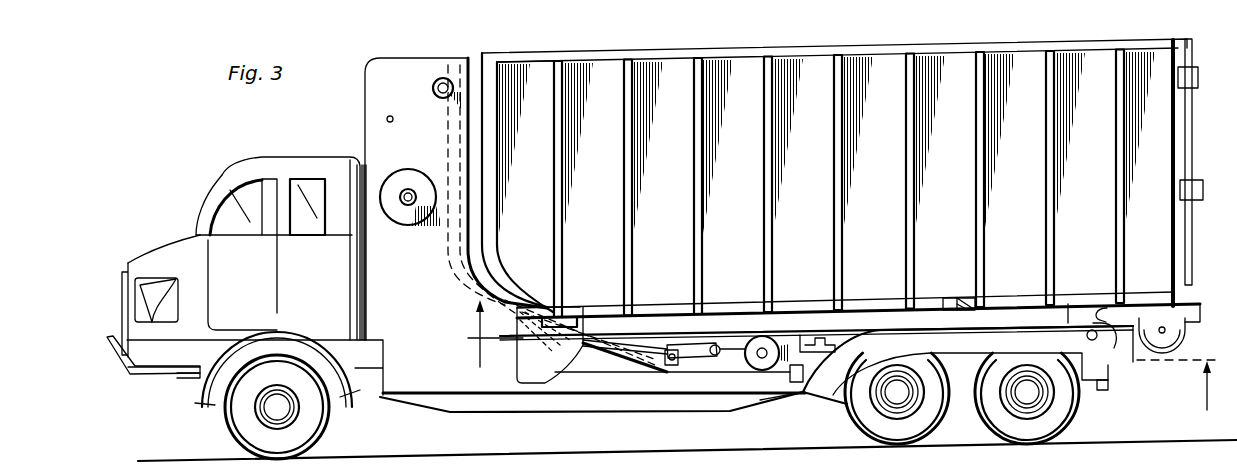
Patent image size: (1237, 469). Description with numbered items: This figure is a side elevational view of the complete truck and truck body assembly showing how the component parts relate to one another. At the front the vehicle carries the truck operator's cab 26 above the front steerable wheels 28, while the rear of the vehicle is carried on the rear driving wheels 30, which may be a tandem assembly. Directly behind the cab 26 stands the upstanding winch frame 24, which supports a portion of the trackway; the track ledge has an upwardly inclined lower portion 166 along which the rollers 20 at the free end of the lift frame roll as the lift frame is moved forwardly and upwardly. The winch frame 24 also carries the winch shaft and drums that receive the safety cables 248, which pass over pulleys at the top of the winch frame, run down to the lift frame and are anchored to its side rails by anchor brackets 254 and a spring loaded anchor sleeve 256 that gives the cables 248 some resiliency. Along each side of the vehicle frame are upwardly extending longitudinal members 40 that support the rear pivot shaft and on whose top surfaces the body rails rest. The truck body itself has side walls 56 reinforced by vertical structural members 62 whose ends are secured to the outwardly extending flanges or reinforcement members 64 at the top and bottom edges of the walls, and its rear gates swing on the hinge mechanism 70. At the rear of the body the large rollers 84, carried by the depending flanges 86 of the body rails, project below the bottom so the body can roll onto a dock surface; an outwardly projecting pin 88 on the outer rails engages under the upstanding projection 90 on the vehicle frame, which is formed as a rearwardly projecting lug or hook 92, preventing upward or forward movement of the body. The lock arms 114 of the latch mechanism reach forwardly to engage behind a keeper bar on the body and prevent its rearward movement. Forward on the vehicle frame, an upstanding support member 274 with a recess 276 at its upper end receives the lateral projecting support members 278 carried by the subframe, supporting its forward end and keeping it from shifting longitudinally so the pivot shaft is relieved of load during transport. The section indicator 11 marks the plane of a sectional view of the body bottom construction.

The section line 11- 11 is at (841, 363).
The rollers 20 is at (775, 369).
The winch frame 24 is at (405, 60).
The truck operator's cab 26 is at (302, 168).
The front steerable wheels 28 is at (300, 425).
The rear driving wheels 30 is at (1060, 400).
The upwardly extending longitudinal members 40 is at (990, 333).
The side walls 56 is at (1081, 56).
The vertical structural members 62 is at (980, 141).
The flanges or reinforcement members 64 is at (1010, 48).
The hinge mechanism 70 is at (1190, 63).
The rollers 84 is at (1165, 346).
The depending flanges 86 is at (1178, 333).
The pin 88 is at (1109, 356).
The upstanding projection 90 is at (1076, 312).
The lug or hook 92 is at (1101, 310).
The lock arms 114 is at (960, 301).
The upwardly inclined lower portion 166 is at (600, 356).
The safety cable 248 is at (816, 306).
The anchor brackets 254 is at (675, 366).
The spring loaded anchor sleeve 256 is at (710, 359).
The upstanding support member 274 is at (550, 345).
The recess 276 is at (548, 302).
The lateral projecting support members 278 is at (580, 312).